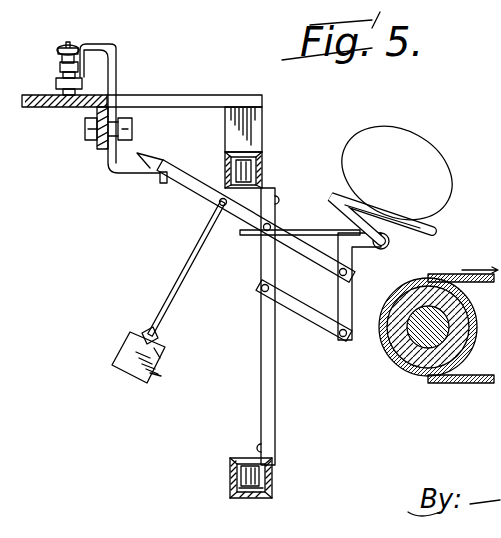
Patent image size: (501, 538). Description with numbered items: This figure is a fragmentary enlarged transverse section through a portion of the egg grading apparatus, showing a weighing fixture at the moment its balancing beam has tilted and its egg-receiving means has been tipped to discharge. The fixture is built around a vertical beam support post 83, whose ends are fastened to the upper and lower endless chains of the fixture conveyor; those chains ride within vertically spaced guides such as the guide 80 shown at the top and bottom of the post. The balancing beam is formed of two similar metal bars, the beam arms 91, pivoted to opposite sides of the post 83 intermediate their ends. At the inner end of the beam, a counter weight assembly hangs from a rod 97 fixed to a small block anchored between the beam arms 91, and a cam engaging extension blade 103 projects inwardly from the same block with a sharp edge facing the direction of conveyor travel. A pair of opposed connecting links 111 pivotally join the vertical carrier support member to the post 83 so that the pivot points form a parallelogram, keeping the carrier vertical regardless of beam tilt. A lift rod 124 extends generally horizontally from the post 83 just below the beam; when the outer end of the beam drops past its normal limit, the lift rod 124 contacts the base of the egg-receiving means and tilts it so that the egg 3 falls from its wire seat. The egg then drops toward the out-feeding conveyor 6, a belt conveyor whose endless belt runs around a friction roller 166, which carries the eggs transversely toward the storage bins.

The egg 3 is at (418, 166).
The out-feeding conveyor 6 is at (467, 280).
The guide 80 is at (272, 488).
The beam support post 83 is at (268, 395).
The beam arm 91 is at (311, 253).
The rod 97 is at (172, 293).
The cam engaging extension blade 103 is at (194, 186).
The connecting link 111 is at (310, 312).
The lift rod 124 is at (304, 230).
The friction roller 166 is at (422, 398).